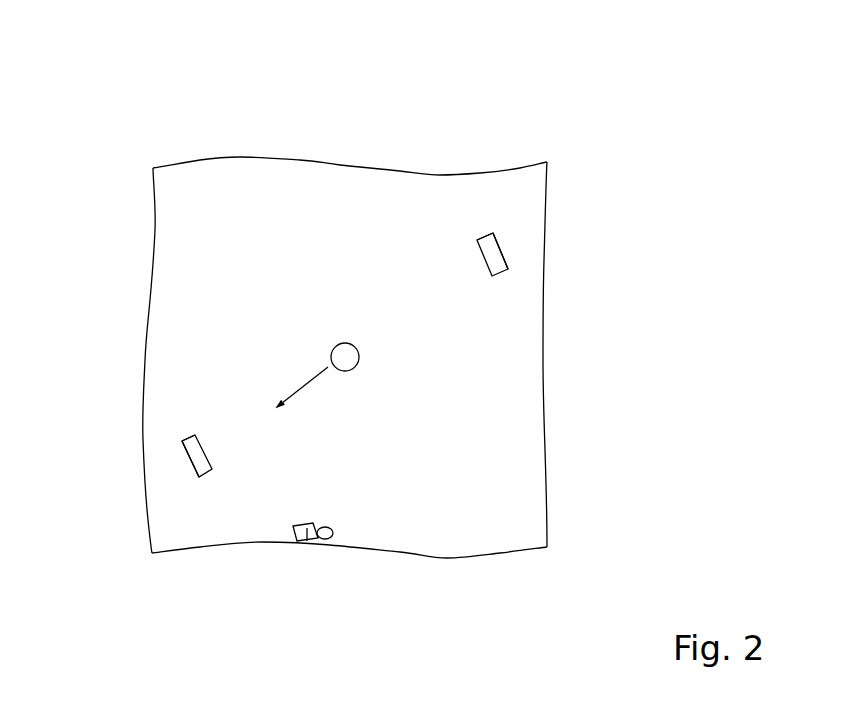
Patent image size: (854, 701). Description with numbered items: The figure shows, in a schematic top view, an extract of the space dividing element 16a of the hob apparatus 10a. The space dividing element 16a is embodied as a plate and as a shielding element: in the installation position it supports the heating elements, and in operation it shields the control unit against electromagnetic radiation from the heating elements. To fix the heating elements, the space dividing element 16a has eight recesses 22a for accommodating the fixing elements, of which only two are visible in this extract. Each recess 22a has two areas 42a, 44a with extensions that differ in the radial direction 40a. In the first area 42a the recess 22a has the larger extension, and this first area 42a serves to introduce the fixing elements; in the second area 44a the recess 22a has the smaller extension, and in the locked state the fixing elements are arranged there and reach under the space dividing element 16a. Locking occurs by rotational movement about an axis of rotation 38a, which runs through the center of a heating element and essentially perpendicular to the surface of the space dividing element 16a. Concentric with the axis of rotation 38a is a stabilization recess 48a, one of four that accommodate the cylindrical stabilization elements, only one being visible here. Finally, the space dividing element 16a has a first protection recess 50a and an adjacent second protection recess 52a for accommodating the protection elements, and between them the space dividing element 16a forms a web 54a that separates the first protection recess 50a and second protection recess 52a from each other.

The hob apparatus 10a is at (632, 86).
The space dividing element 16a is at (523, 328).
The recess 22a is at (487, 246).
The axis of rotation 38a is at (343, 357).
The radial direction 40a is at (303, 392).
The first area 42a is at (503, 238).
The second area 44a is at (510, 257).
The stabilization recess 48a is at (330, 353).
The first protection recess 50a is at (318, 545).
The second protection recess 52a is at (300, 538).
The web 54a is at (307, 543).